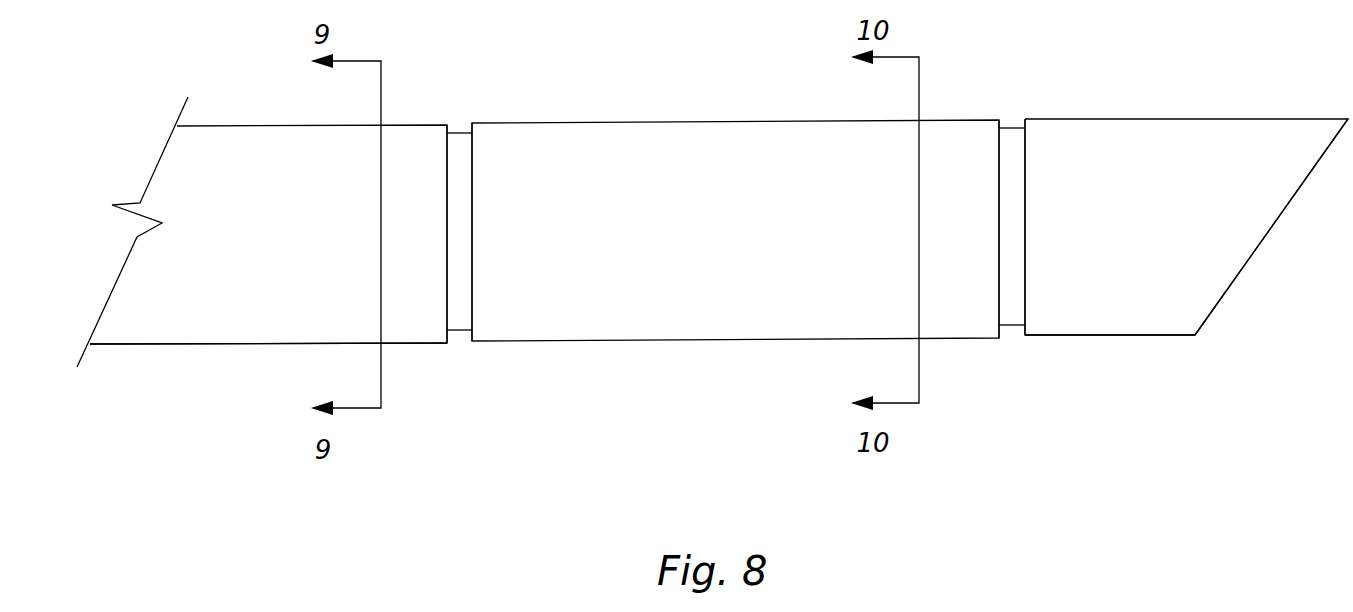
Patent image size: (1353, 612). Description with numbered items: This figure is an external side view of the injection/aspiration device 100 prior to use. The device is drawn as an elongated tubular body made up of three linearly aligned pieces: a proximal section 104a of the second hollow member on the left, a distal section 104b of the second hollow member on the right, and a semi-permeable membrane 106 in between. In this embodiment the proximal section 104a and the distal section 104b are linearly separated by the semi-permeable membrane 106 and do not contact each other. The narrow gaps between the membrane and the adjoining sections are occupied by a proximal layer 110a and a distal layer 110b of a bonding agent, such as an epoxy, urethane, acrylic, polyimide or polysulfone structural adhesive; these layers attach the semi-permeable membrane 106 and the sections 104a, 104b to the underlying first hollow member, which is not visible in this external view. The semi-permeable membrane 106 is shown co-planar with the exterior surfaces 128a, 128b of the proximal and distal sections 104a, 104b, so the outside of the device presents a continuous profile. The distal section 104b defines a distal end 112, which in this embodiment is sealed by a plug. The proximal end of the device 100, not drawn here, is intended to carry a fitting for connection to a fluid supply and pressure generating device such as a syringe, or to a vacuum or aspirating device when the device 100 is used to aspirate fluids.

The injection/aspiration device 100 is at (645, 432).
The proximal section of the second hollow member 104a is at (250, 305).
The distal section of the second hollow member 104b is at (1089, 279).
The semi-permeable membrane 106 is at (710, 147).
The proximal layer of bonding agent 110a is at (456, 133).
The distal layer of bonding agent 110b is at (1010, 128).
The distal end 112 is at (1268, 237).
The exterior surface of the proximal section 128a is at (253, 127).
The exterior surface of the distal section 128b is at (1125, 119).